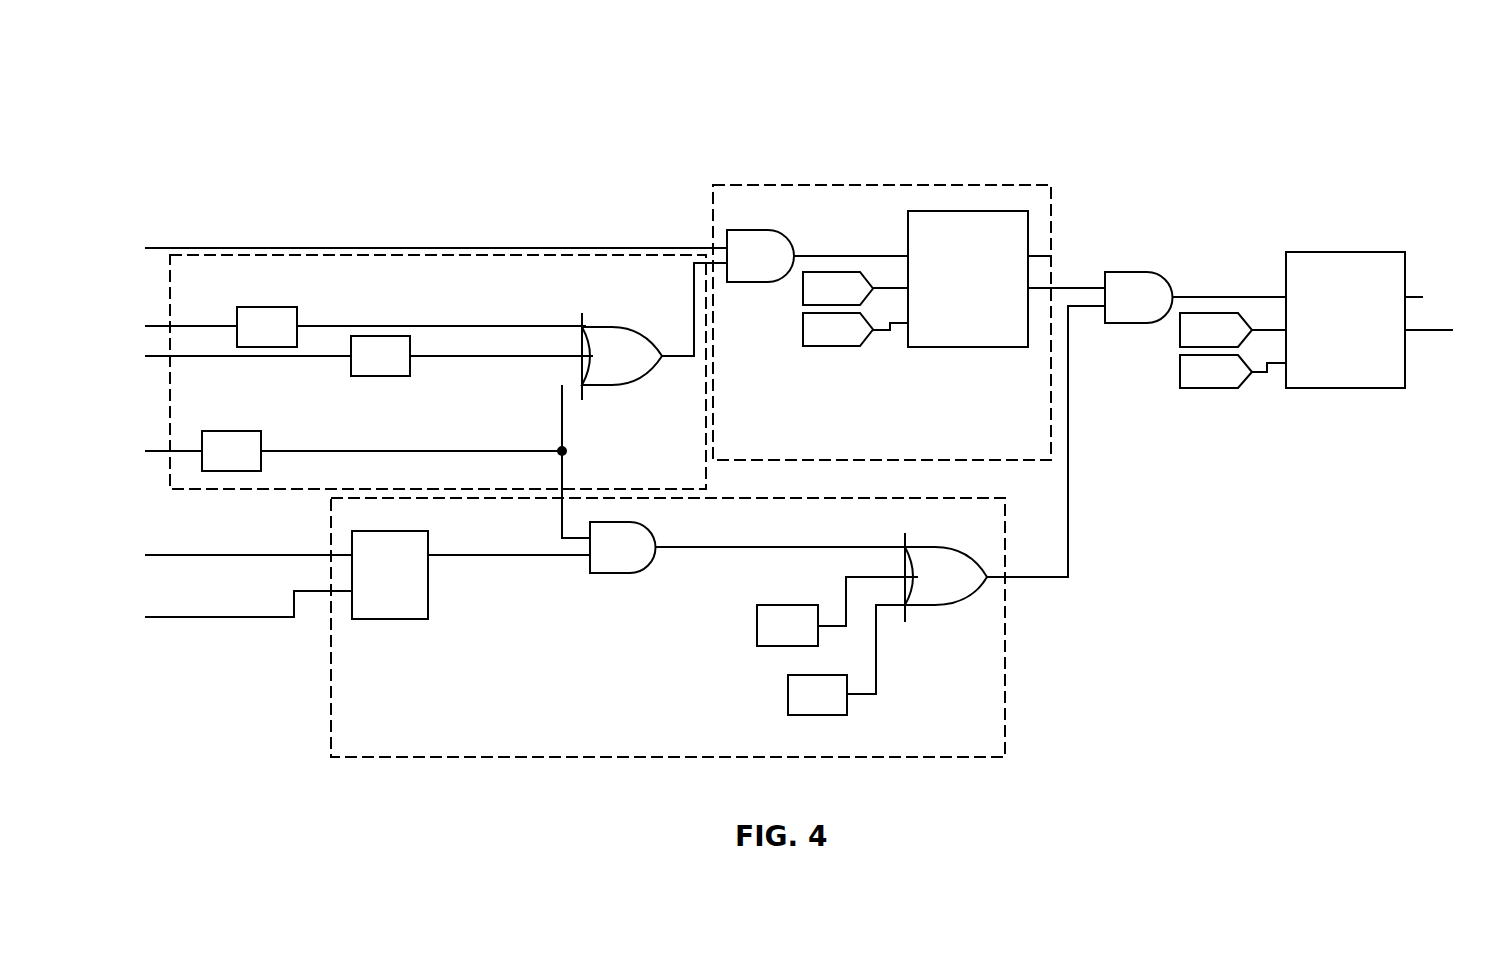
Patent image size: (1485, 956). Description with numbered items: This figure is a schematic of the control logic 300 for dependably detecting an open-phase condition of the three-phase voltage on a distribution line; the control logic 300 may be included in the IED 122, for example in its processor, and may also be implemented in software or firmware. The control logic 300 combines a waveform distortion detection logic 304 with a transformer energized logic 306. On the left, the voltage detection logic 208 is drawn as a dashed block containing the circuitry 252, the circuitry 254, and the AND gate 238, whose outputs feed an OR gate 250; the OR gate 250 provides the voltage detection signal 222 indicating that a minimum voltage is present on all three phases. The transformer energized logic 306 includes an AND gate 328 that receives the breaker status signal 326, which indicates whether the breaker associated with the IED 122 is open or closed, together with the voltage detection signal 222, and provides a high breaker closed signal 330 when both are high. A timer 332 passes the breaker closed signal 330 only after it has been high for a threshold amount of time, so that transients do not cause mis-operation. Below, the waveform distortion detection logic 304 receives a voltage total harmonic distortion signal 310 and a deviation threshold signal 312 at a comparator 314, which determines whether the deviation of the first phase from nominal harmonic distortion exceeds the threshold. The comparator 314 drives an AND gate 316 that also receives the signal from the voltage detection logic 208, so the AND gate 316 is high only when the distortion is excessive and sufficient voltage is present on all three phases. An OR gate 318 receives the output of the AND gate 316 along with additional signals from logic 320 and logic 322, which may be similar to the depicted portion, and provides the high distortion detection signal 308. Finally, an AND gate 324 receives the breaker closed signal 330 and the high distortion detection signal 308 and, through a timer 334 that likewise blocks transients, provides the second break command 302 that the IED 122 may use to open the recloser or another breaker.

The control logic 300 is at (1188, 83).
The IED 122 is at (1300, 66).
The breaker status signal 326 is at (239, 247).
The voltage detection logic 208 is at (170, 377).
The circuitry 252 is at (267, 307).
The circuitry 254 is at (388, 377).
The AND gate 238 is at (230, 431).
The OR gate 250 is at (618, 385).
The voltage detection signal 222 is at (694, 315).
The transformer energized logic 306 is at (985, 185).
The AND gate 328 is at (782, 236).
The timer 332 is at (968, 348).
The breaker closed signal 330 is at (1073, 288).
The AND gate 324 is at (1160, 272).
The timer 334 is at (1346, 390).
The second break command 302 is at (1420, 332).
The high distortion detection signal 308 is at (1068, 447).
The waveform distortion detection logic 304 is at (975, 757).
The voltage total harmonic distortion signal 310 is at (212, 555).
The deviation threshold signal 312 is at (212, 617).
The comparator 314 is at (393, 619).
The AND gate 316 is at (618, 573).
The logic 320 is at (757, 625).
The logic 322 is at (788, 694).
The OR gate 318 is at (937, 607).